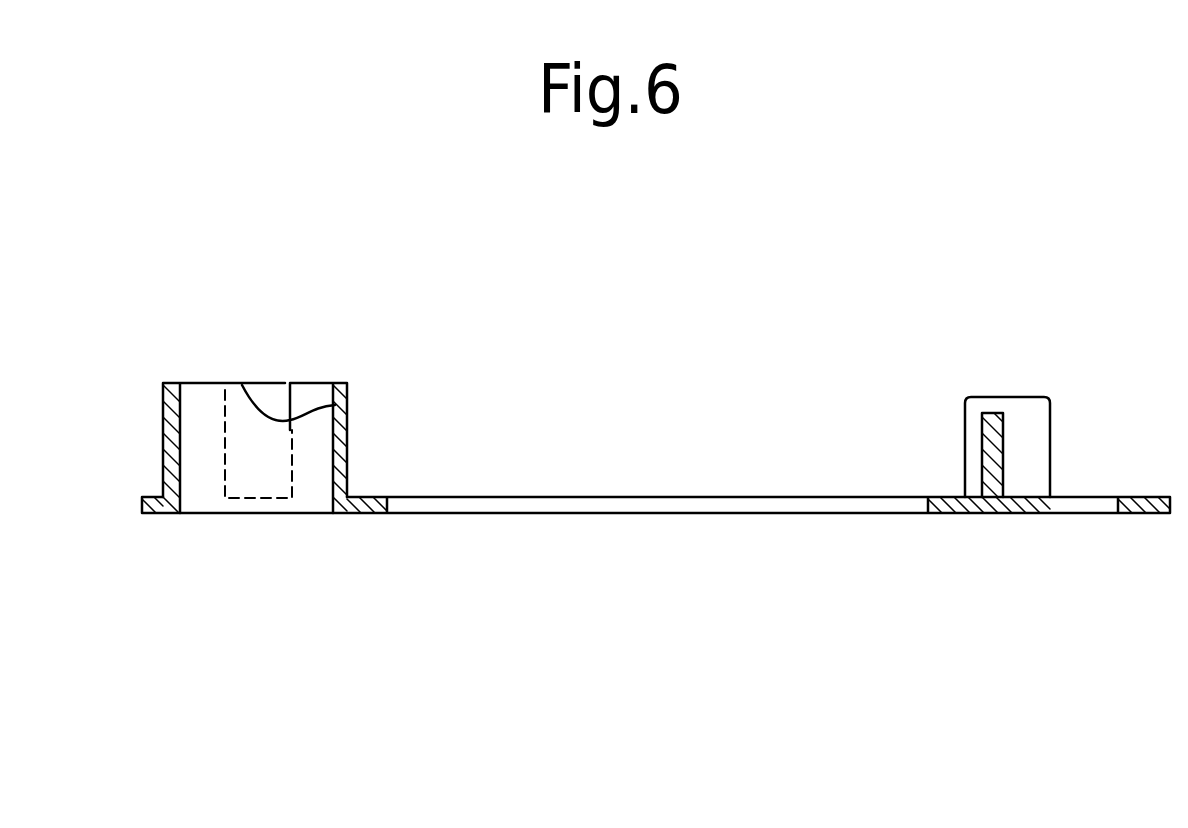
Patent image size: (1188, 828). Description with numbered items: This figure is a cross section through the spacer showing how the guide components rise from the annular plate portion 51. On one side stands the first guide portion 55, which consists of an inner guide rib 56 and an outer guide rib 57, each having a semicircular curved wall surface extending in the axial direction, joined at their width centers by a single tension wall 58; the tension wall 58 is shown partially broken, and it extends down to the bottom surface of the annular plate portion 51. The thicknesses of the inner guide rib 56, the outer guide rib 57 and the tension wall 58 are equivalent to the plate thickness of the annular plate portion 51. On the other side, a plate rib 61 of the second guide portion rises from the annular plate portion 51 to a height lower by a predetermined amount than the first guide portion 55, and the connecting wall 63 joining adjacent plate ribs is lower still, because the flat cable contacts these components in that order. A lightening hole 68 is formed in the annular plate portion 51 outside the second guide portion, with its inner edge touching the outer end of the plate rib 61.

The annular plate portion 51 is at (938, 513).
The first guide portion 55 is at (241, 337).
The inner guide rib 56 is at (312, 395).
The outer guide rib 57 is at (163, 422).
The tension wall 58 is at (237, 405).
The plate rib 61 is at (1017, 397).
The connecting wall 63 is at (1003, 441).
The lightening hole 68 is at (1102, 513).